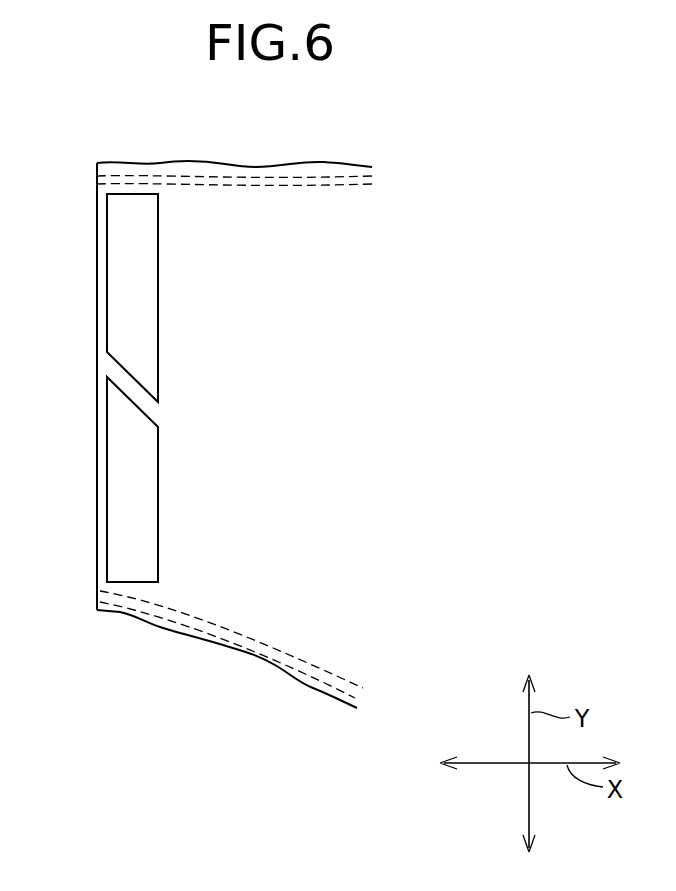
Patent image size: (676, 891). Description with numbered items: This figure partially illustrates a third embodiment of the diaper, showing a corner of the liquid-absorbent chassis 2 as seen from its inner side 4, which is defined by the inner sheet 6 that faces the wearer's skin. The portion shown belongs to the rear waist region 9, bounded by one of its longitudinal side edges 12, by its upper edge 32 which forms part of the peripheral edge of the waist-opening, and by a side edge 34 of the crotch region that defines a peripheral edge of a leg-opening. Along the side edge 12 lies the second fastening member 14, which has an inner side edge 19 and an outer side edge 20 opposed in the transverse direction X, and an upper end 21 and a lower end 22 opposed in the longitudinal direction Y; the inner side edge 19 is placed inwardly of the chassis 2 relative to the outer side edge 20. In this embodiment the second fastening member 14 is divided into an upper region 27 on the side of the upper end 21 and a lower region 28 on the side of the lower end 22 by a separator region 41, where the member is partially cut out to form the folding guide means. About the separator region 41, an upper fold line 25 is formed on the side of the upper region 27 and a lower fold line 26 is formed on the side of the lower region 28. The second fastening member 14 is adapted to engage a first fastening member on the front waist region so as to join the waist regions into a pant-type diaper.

The liquid-absorbent chassis 2 is at (218, 406).
The inner side 4 is at (298, 463).
The inner sheet 6 is at (340, 238).
The rear waist region 9 is at (287, 203).
The side edges of the rear waist region 12 is at (102, 548).
The second fastening member 14 is at (140, 346).
The inner side edge 19 is at (167, 298).
The outer side edge 20 is at (129, 256).
The upper end 21 is at (152, 256).
The lower end 22 is at (122, 583).
The upper fold line 25 is at (148, 385).
The lower fold line 26 is at (122, 479).
The upper region 27 is at (129, 256).
The lower region 28 is at (122, 479).
The upper edge of the rear waist region 32 is at (233, 165).
The side edge of the crotch region 34 is at (227, 645).
The separator region 41 is at (133, 398).